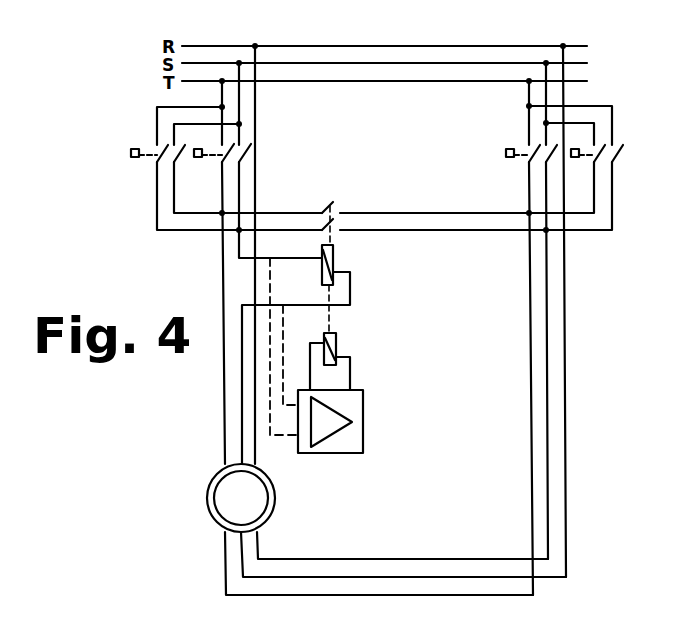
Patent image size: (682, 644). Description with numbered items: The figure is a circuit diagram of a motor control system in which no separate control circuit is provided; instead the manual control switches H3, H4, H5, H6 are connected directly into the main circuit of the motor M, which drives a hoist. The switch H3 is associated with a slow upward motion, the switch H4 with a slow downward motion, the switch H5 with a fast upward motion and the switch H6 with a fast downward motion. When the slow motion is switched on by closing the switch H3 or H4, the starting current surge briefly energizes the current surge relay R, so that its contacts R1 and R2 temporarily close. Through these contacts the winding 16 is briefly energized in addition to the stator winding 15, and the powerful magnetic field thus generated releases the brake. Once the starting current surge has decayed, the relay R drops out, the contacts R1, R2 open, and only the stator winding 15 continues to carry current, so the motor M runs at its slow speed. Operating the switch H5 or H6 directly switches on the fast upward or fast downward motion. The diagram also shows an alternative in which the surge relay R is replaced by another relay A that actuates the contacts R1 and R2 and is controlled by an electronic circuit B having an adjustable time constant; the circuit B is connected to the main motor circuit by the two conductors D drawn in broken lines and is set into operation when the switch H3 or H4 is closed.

The manual control switch H3 is at (134, 152).
The manual control switch H4 is at (198, 150).
The manual control switch H5 is at (508, 152).
The manual control switch H6 is at (574, 150).
The relay contact R1 is at (330, 201).
The relay contact R2 is at (322, 232).
The current surge relay R is at (335, 253).
The conductors D is at (268, 350).
The relay A is at (338, 341).
The electronic circuit B is at (362, 433).
The motor M is at (246, 499).
The winding 16 is at (212, 478).
The stator winding 15 is at (213, 514).